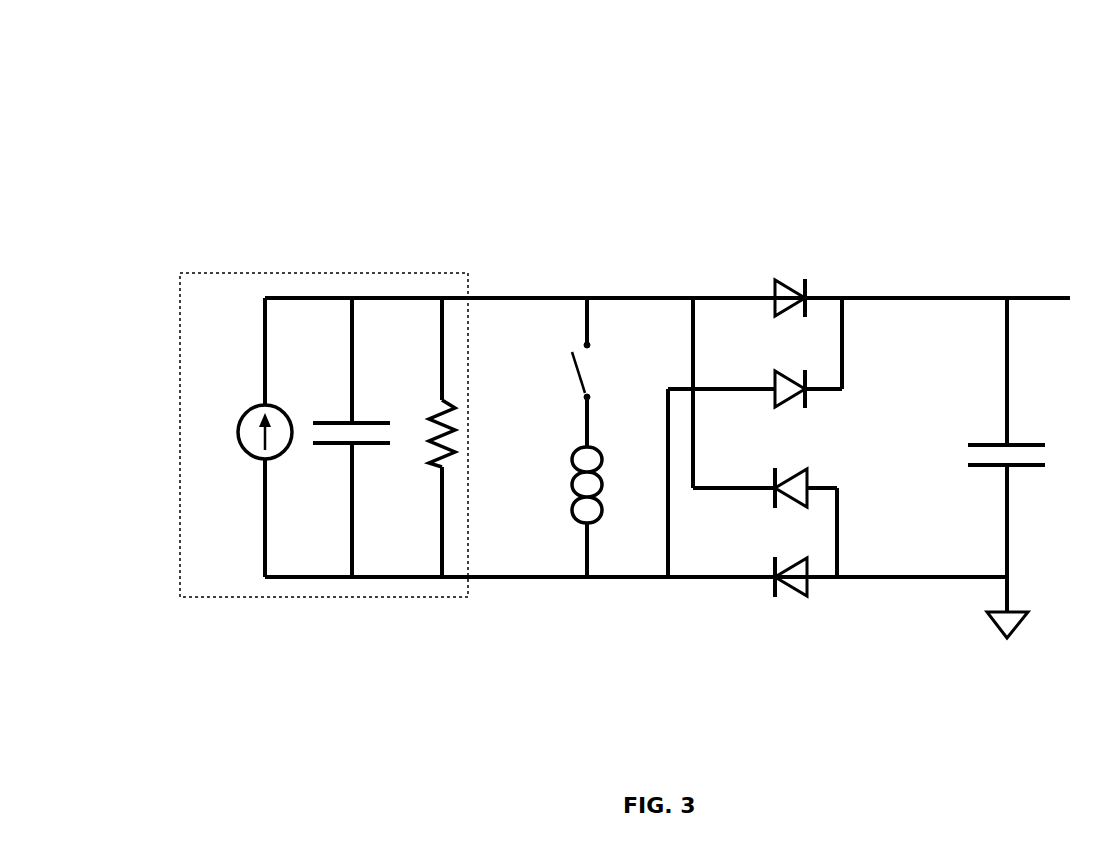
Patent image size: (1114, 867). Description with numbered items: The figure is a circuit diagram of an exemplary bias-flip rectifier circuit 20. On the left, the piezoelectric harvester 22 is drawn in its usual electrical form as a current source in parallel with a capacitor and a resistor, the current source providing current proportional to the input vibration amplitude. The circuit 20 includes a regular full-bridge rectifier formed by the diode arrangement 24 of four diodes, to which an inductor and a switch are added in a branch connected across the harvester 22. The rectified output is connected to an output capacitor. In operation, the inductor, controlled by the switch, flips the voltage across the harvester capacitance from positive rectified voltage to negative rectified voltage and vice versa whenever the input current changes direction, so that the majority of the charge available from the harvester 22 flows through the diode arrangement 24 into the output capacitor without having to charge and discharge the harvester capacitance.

The bias-flip rectifier circuit 20 is at (118, 94).
The harvester 22 is at (331, 419).
The diode arrangement 24 is at (770, 365).